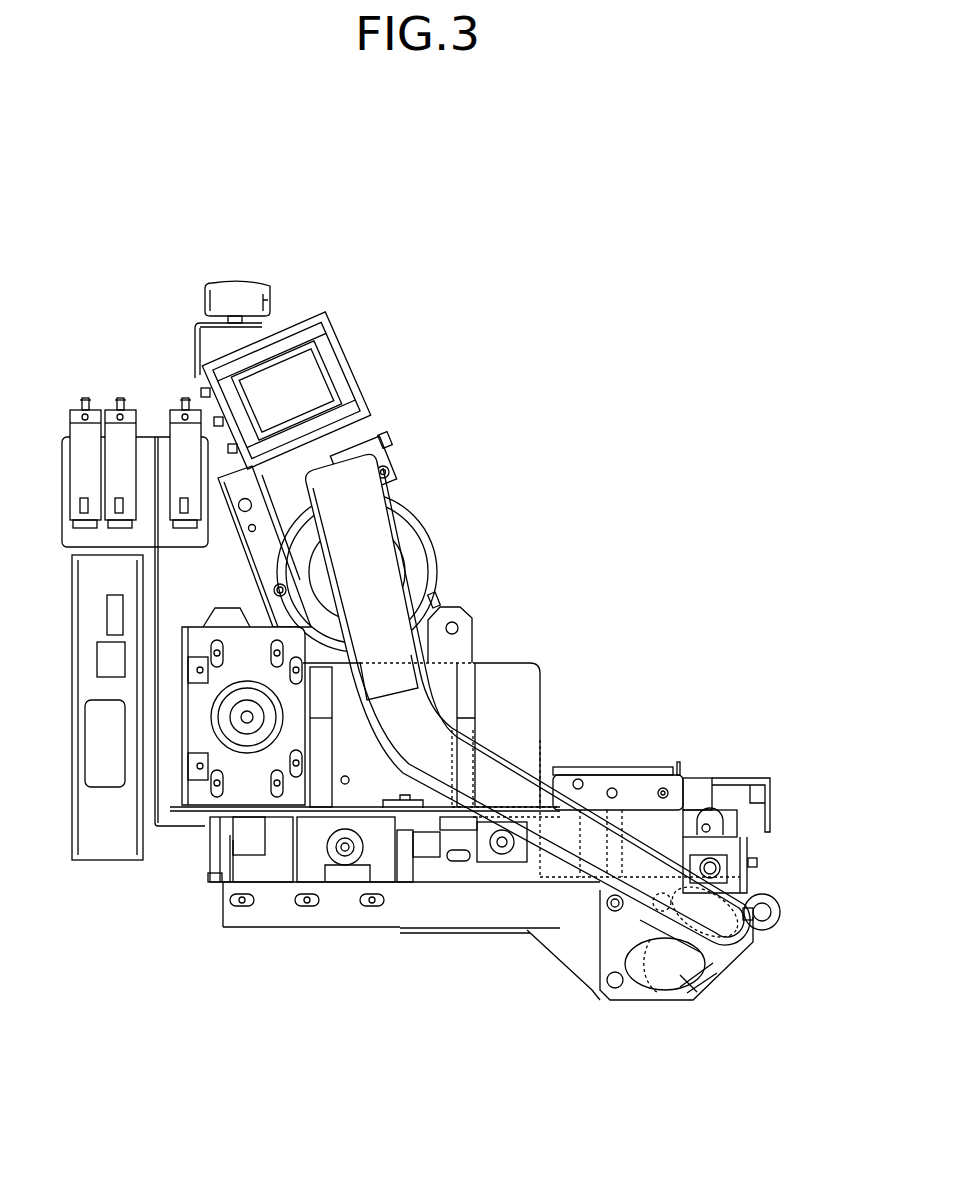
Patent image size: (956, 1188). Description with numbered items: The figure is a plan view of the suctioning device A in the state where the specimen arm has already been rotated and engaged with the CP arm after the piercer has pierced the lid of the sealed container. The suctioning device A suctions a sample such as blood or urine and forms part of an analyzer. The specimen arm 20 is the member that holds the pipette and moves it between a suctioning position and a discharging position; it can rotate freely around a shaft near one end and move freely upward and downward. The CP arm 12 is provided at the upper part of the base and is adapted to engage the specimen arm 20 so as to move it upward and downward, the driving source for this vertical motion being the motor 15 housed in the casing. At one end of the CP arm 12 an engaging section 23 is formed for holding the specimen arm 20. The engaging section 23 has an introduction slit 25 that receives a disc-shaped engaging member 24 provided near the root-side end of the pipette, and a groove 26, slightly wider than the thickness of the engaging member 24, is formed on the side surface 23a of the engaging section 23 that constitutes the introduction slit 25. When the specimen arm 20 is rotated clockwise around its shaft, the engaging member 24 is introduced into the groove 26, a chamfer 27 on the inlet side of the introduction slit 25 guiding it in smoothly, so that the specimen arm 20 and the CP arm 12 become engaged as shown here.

The suctioning device A is at (463, 373).
The CP arm 12 is at (557, 917).
The motor 15 is at (250, 785).
The specimen arm 20 is at (423, 740).
The engaging section 23 is at (727, 955).
The side surface 23a is at (697, 992).
The engaging member 24 is at (725, 953).
The introduction slit 25 is at (697, 932).
The groove 26 is at (679, 961).
The chamfer 27 is at (765, 892).